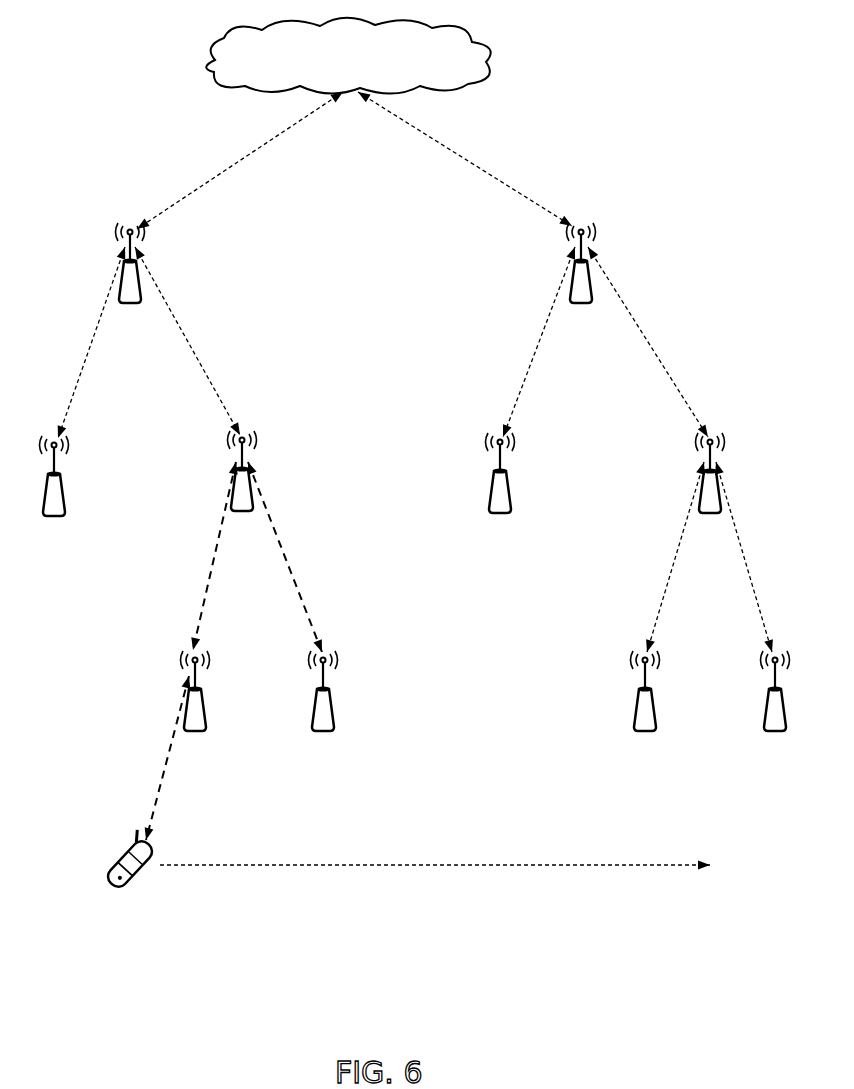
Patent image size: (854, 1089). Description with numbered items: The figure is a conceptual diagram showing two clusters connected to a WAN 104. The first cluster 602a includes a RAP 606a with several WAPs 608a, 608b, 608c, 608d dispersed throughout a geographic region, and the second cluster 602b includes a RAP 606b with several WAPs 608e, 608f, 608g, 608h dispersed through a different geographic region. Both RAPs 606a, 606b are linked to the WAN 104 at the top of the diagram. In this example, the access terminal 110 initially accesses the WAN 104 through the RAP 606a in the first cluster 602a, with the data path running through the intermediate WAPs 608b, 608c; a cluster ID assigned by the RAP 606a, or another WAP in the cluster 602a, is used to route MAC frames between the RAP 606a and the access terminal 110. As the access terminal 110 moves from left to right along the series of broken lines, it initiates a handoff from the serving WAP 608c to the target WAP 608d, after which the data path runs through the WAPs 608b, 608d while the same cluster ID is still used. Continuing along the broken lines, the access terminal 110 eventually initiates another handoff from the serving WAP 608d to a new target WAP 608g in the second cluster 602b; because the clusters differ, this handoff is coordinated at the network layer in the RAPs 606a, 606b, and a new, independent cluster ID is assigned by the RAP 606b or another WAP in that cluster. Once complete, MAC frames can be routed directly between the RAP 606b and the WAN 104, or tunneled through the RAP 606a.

The WAN 104 is at (348, 56).
The first cluster 602a is at (90, 126).
The second cluster 602b is at (683, 218).
The RAP 606a is at (131, 278).
The RAP 606b is at (587, 278).
The WAP 608a is at (59, 487).
The WAP 608b is at (249, 484).
The WAP 608c is at (197, 702).
The WAP 608d is at (333, 702).
The WAP 608e is at (507, 486).
The WAP 608f is at (715, 486).
The WAP 608g is at (646, 702).
The WAP 608h is at (776, 702).
The access terminal 110 is at (127, 873).